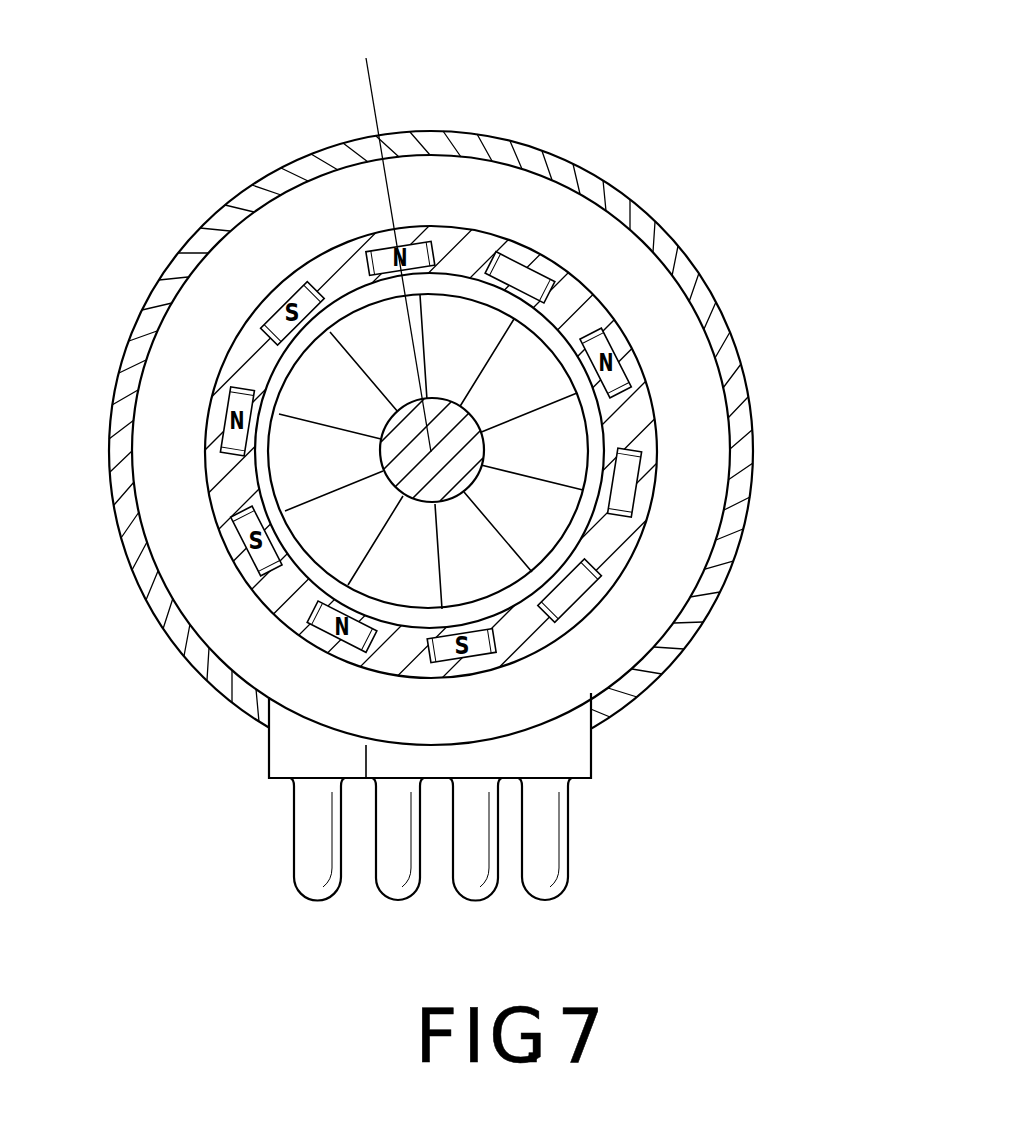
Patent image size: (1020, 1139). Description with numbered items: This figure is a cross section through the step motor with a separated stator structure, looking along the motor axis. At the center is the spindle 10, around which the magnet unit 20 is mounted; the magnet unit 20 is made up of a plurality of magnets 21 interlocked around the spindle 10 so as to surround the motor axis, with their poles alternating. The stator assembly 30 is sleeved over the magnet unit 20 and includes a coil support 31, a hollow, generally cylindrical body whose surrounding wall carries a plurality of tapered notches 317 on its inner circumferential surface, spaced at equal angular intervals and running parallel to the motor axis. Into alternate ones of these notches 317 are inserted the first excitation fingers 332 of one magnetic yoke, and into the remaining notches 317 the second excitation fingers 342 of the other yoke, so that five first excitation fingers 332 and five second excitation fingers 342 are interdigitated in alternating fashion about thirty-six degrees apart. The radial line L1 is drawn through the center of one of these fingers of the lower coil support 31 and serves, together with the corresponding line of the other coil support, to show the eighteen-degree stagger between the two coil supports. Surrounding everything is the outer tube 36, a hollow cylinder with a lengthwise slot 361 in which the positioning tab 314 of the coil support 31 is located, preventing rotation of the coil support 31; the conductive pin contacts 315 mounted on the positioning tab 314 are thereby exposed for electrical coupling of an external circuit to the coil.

The spindle 10 is at (475, 449).
The magnet unit 20 is at (467, 317).
The magnets 21 is at (484, 324).
The stator assembly 30 is at (667, 212).
The coil support 31 is at (647, 404).
The outer tube 36 is at (190, 240).
The notches 317 is at (552, 298).
The second excitation fingers 342 is at (633, 498).
The first excitation fingers 332 is at (587, 582).
The slot 361 is at (258, 703).
The positioning tab 314 is at (577, 755).
The conductive pin contacts 315 is at (537, 845).
The radial line L1 is at (388, 232).